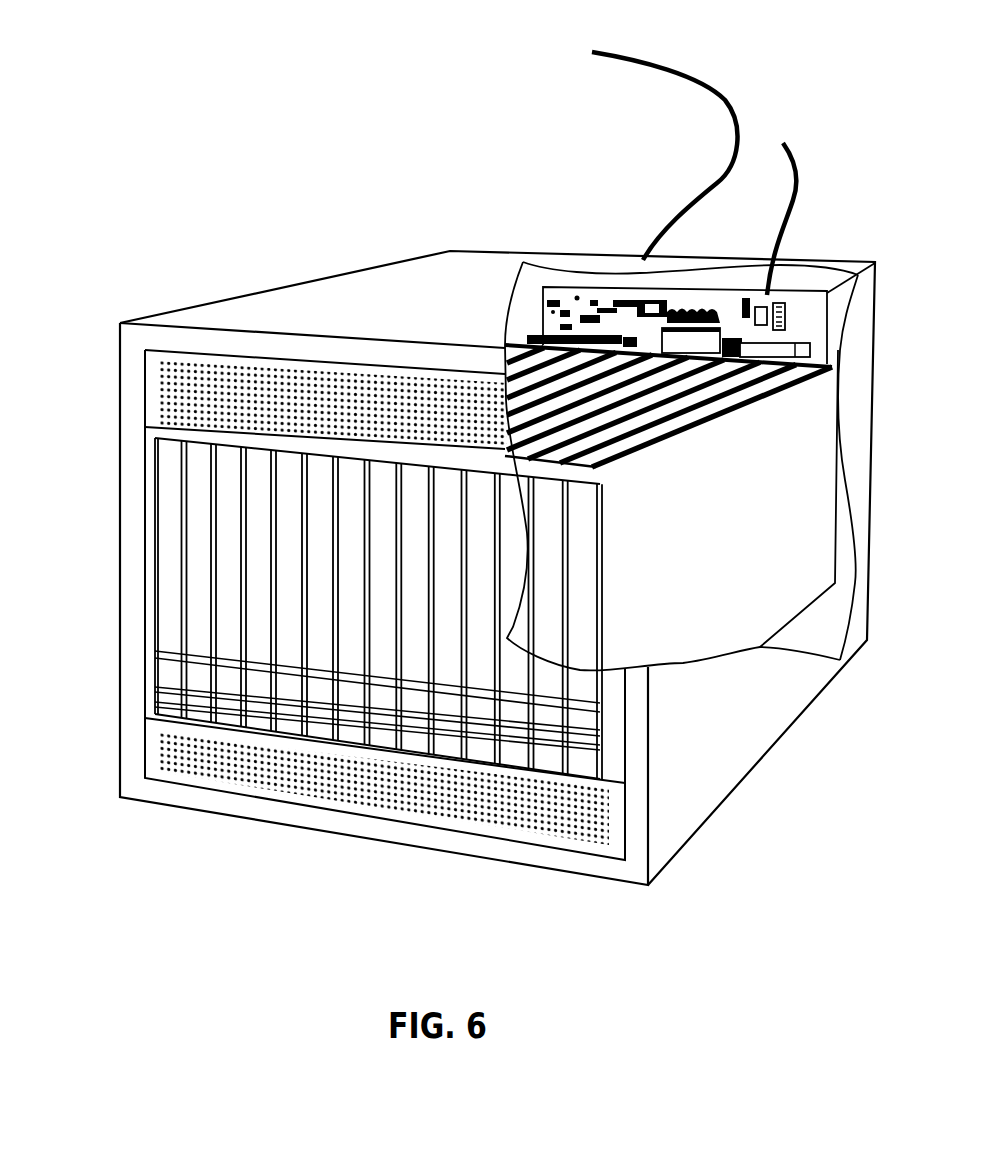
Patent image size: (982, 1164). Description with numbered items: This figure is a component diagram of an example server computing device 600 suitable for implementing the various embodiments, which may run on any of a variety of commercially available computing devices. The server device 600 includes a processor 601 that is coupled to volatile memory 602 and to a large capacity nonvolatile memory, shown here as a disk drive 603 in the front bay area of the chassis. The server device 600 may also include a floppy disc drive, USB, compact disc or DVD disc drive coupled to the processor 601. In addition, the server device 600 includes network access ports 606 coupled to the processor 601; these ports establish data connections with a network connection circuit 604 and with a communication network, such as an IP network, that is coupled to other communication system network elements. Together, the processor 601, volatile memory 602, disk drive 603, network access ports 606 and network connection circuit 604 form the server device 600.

The server computing device 600 is at (350, 270).
The processor 601 is at (697, 347).
The volatile memory 602 is at (800, 350).
The disk drive 603 is at (230, 522).
The network connection circuit 604 is at (738, 122).
The network access ports 606 is at (582, 310).